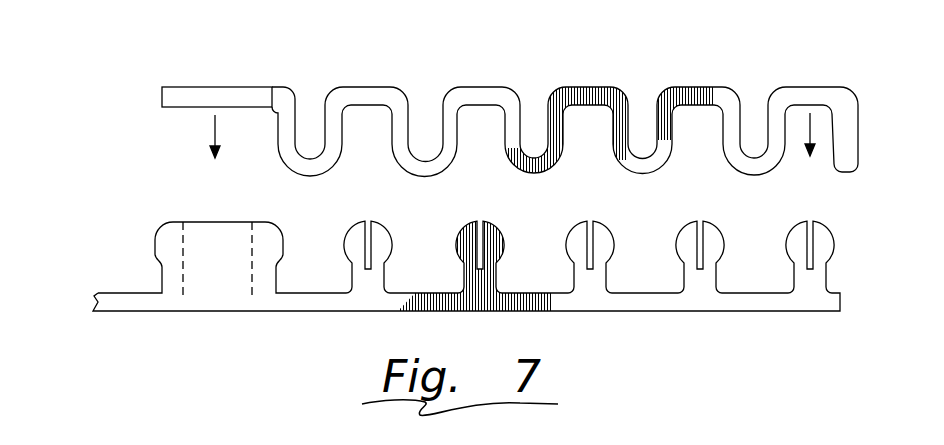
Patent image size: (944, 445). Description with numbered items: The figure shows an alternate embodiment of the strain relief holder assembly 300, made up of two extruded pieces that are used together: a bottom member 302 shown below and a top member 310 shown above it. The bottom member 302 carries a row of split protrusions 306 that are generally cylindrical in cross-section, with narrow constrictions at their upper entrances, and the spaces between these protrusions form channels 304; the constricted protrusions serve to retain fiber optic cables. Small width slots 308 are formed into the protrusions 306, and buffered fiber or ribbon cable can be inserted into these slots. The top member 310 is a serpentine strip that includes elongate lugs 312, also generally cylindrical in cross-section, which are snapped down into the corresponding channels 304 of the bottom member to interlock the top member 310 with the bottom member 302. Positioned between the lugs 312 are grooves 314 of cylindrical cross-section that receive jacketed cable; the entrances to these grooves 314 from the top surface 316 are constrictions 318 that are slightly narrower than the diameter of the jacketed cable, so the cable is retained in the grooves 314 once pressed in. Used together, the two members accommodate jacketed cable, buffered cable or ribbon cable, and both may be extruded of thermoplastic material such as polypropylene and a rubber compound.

The strain relief holder assembly 300 is at (140, 131).
The bottom member 302 is at (267, 300).
The channels 304 is at (437, 292).
The split protrusions 306 is at (675, 238).
The slots 308 is at (809, 222).
The top member 310 is at (287, 103).
The lugs 312 is at (298, 170).
The grooves 314 is at (422, 157).
The top surface 316 is at (587, 70).
The constrictions 318 is at (550, 103).